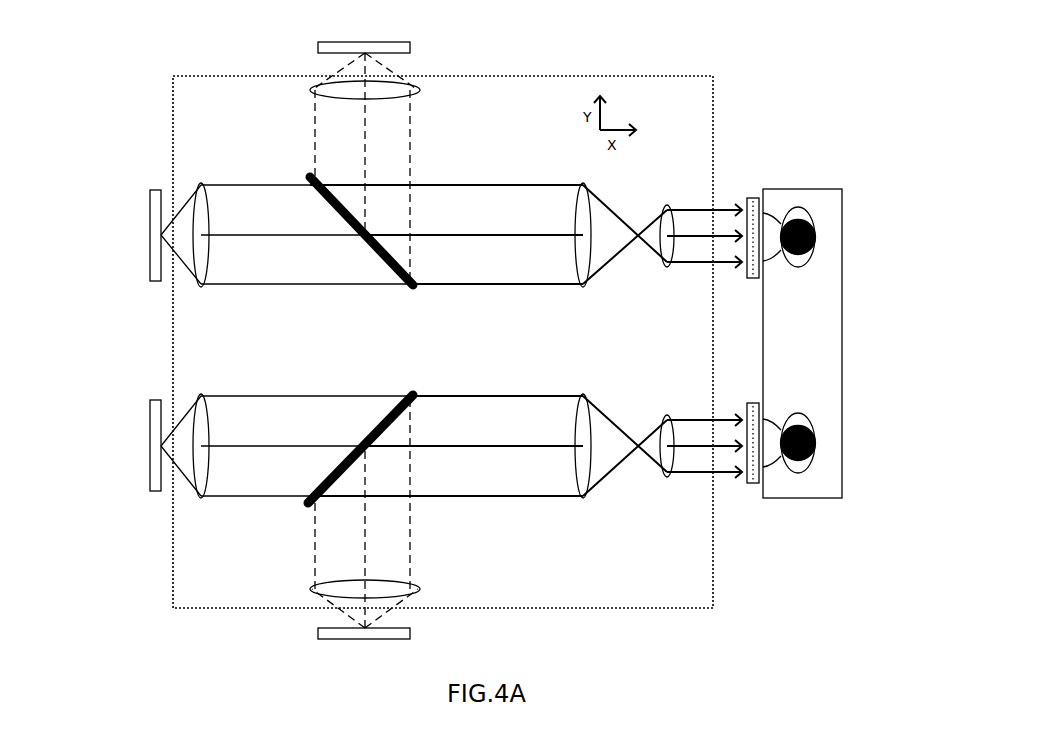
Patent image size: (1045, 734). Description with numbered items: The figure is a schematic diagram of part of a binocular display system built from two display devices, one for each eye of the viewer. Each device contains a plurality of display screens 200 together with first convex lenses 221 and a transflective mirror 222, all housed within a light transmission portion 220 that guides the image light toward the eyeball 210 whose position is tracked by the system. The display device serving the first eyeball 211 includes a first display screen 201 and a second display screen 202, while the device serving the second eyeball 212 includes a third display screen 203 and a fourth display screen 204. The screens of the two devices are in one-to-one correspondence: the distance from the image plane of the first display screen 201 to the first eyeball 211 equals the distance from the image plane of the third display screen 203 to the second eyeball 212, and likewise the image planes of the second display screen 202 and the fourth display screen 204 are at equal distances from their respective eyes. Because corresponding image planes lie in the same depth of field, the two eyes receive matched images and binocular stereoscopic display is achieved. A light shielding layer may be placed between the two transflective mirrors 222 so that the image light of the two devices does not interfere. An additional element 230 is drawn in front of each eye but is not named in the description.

The display screens 200 is at (230, 341).
The first display screen 201 is at (150, 212).
The second display screen 202 is at (340, 42).
The third display screen 203 is at (150, 469).
The fourth display screen 204 is at (338, 640).
The eyeball 210 is at (842, 340).
The first eyeball 211 is at (810, 213).
The second eyeball 212 is at (810, 463).
The light transmission portion 220 is at (203, 76).
The first convex lens 221 is at (200, 275).
The transflective mirror 222 is at (385, 417).
The optical combiner 230 is at (753, 197).